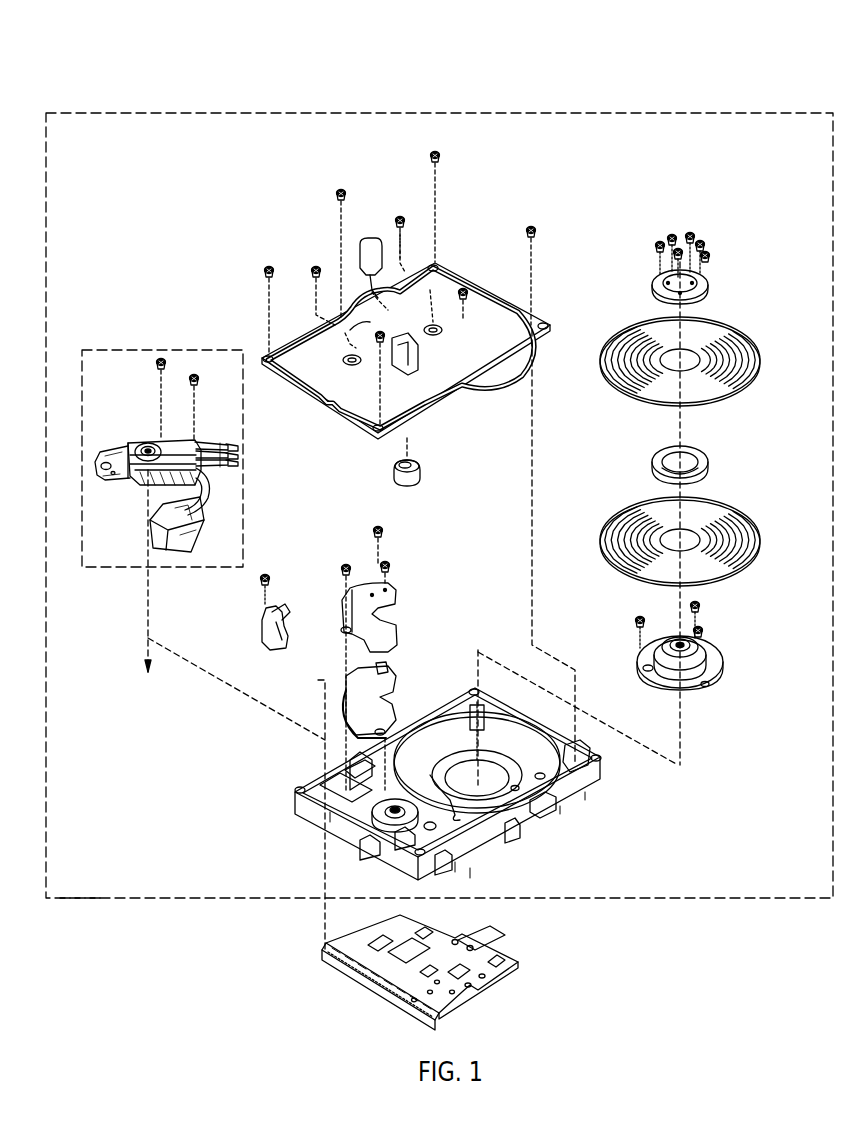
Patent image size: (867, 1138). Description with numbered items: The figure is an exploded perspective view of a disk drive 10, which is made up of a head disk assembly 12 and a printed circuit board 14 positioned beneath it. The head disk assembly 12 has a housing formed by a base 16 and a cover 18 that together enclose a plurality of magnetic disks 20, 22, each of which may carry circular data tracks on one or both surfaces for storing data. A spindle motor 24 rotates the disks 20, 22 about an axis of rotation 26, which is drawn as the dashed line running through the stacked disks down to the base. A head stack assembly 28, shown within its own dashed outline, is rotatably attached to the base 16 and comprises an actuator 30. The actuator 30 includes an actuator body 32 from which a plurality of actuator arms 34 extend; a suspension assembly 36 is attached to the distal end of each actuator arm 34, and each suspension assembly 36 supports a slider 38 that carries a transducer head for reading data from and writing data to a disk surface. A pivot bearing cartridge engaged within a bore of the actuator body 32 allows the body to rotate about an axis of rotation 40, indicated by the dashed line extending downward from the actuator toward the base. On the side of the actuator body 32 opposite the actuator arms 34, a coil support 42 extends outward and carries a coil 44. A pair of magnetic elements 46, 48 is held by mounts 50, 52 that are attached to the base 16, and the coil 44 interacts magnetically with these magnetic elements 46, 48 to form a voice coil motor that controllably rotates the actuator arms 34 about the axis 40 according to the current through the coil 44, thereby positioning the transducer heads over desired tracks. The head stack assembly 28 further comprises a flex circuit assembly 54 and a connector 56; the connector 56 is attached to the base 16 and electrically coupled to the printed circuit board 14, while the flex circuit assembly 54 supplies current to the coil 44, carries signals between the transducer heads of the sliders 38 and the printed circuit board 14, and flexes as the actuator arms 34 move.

The disk drive 10 is at (232, 103).
The head disk assembly 12 is at (186, 899).
The printed circuit board 14 is at (508, 970).
The base 16 is at (478, 853).
The cover 18 is at (484, 360).
The magnetic disk 20 is at (620, 340).
The magnetic disk 22 is at (620, 520).
The spindle motor 24 is at (705, 650).
The axis of rotation 26 is at (684, 729).
The head stack assembly 28 is at (192, 348).
The actuator 30 is at (148, 443).
The actuator body 32 is at (134, 445).
The actuator arm 34 is at (180, 442).
The suspension assembly 36 is at (206, 442).
The slider 38 is at (240, 452).
The axis of rotation 40 is at (150, 598).
The coil support 42 is at (97, 468).
The coil 44 is at (104, 457).
The magnetic element 46 is at (400, 612).
The magnetic element 48 is at (382, 676).
The mount 50 is at (348, 606).
The mount 52 is at (346, 700).
The flex circuit assembly 54 is at (205, 490).
The connector 56 is at (152, 540).